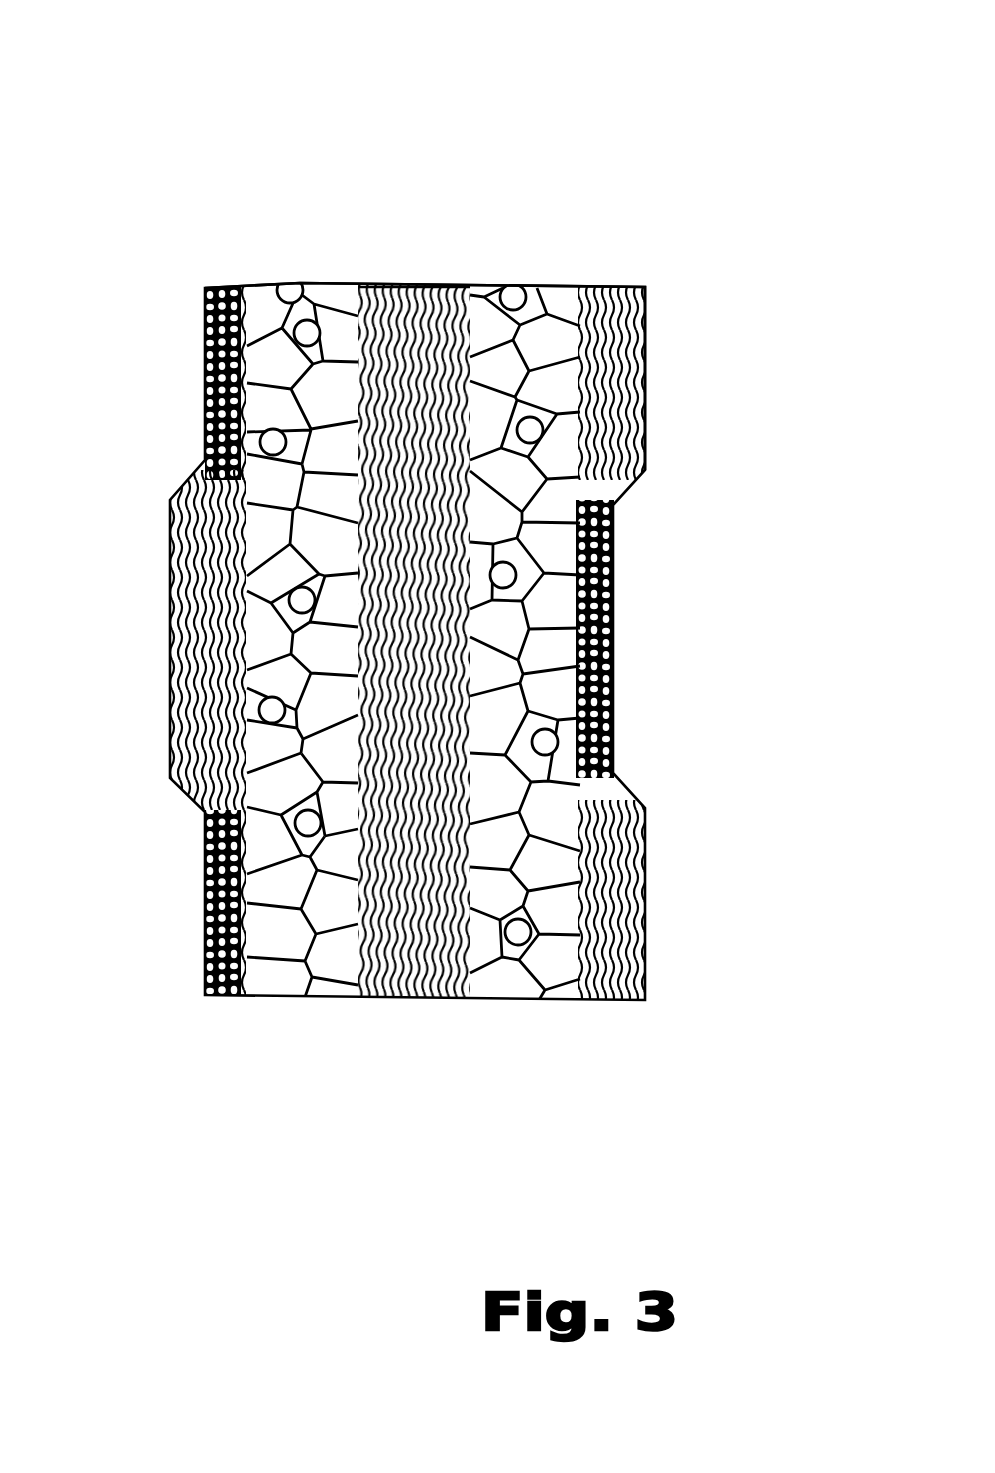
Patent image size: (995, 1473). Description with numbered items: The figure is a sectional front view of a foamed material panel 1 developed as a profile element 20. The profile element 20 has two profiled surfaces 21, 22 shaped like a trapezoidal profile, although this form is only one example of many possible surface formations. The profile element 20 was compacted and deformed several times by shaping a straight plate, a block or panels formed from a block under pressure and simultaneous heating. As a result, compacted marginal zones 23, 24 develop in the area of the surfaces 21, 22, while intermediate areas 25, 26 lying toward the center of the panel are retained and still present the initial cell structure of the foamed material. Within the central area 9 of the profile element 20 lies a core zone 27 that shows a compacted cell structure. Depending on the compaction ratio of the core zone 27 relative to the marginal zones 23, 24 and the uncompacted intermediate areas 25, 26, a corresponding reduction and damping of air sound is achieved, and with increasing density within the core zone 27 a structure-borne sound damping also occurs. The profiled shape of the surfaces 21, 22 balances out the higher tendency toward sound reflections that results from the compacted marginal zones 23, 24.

The foamed material panel 1 is at (678, 186).
The central area 9 is at (444, 172).
The profile element 20 is at (654, 274).
The profiled surface 21 is at (165, 605).
The profiled surface 22 is at (613, 663).
The compacted marginal zone 23 is at (218, 1008).
The compacted marginal zone 24 is at (611, 1008).
The intermediate area 25 is at (294, 262).
The intermediate area 26 is at (509, 244).
The core zone 27 is at (389, 262).